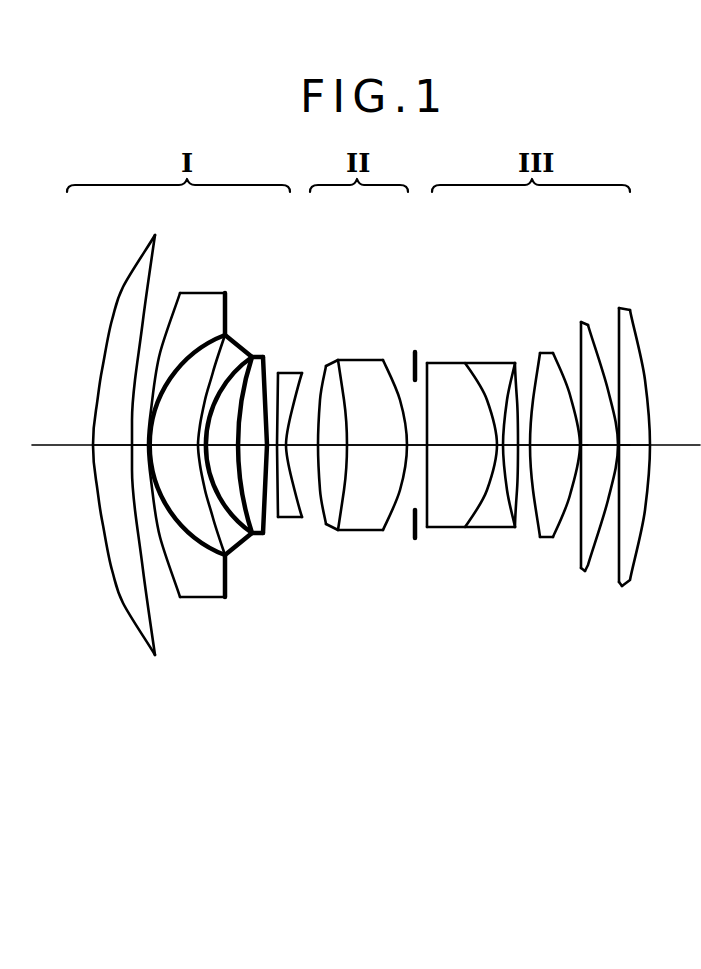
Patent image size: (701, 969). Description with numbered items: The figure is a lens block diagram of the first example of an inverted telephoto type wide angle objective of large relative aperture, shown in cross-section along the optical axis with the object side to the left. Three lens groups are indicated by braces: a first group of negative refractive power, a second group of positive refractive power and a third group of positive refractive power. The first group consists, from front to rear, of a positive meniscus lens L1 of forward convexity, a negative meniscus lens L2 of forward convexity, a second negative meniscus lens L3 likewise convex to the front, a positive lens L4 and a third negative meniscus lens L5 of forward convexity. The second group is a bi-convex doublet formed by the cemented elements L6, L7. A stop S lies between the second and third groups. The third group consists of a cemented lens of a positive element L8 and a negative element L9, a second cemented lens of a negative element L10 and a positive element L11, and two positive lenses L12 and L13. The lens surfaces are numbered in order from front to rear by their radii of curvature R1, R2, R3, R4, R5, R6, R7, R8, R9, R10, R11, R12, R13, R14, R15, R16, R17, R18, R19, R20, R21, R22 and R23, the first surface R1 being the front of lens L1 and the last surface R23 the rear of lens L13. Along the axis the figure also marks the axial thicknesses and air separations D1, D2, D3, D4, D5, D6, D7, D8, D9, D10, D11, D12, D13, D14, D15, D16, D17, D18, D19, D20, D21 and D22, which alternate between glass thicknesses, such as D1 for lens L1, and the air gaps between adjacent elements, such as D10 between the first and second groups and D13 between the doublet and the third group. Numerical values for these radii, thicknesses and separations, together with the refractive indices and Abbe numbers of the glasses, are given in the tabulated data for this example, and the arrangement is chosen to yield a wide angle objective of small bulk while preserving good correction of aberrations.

The positive meniscus lens L1 is at (139, 446).
The negative meniscus lens L2 is at (204, 446).
The second negative meniscus lens L3 is at (238, 433).
The positive lens L4 is at (267, 455).
The third negative meniscus lens L5 is at (320, 462).
The doublet element L6 is at (338, 434).
The doublet element L7 is at (381, 450).
The positive element L8 is at (470, 449).
The negative element L9 is at (499, 445).
The negative element L10 is at (526, 456).
The positive element L11 is at (554, 450).
The positive lens L12 is at (598, 452).
The positive lens L13 is at (656, 442).
The stop S is at (415, 355).
The radius of curvature R1 is at (122, 596).
The radius of curvature R2 is at (150, 632).
The radius of curvature R3 is at (170, 576).
The radius of curvature R4 is at (205, 597).
The radius of curvature R5 is at (226, 578).
The radius of curvature R6 is at (241, 540).
The radius of curvature R7 is at (268, 540).
The radius of curvature R8 is at (277, 519).
The radius of curvature R9 is at (287, 519).
The radius of curvature R10 is at (321, 526).
The radius of curvature R11 is at (333, 514).
The radius of curvature R12 is at (343, 531).
The radius of curvature R13 is at (395, 525).
The radius of curvature R14 is at (427, 532).
The radius of curvature R15 is at (475, 528).
The radius of curvature R16 is at (507, 530).
The radius of curvature R17 is at (515, 528).
The radius of curvature R18 is at (530, 533).
The radius of curvature R19 is at (570, 540).
The radius of curvature R20 is at (582, 575).
The radius of curvature R21 is at (596, 565).
The radius of curvature R22 is at (618, 583).
The radius of curvature R23 is at (637, 552).
The axial thickness D1 is at (112, 442).
The air separation D2 is at (133, 446).
The axial thickness D3 is at (140, 445).
The air separation D4 is at (177, 442).
The axial thickness D5 is at (198, 446).
The air separation D6 is at (222, 442).
The axial thickness D7 is at (253, 442).
The air separation D8 is at (272, 446).
The axial thickness D9 is at (282, 446).
The air separation D10 is at (300, 442).
The axial thickness D11 is at (333, 442).
The axial thickness D12 is at (378, 442).
The air separation D13 is at (408, 446).
The axial thickness D14 is at (457, 442).
The axial thickness D15 is at (500, 446).
The air separation D16 is at (503, 435).
The axial thickness D17 is at (528, 446).
The axial thickness D18 is at (560, 442).
The air separation D19 is at (581, 446).
The axial thickness D20 is at (600, 442).
The air separation D21 is at (620, 446).
The axial thickness D22 is at (633, 446).